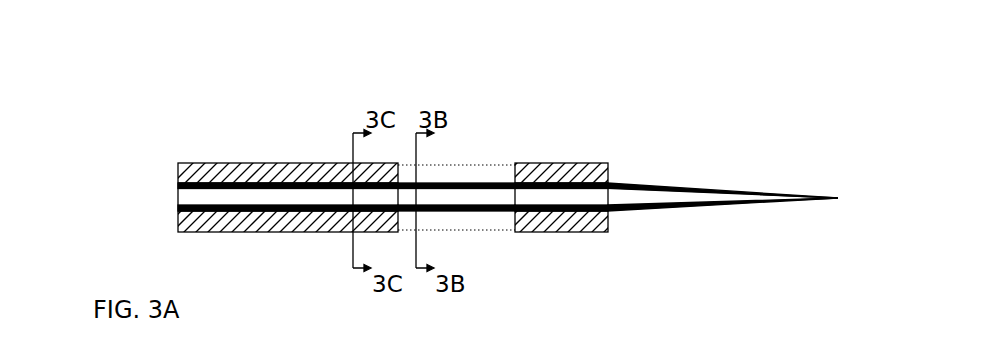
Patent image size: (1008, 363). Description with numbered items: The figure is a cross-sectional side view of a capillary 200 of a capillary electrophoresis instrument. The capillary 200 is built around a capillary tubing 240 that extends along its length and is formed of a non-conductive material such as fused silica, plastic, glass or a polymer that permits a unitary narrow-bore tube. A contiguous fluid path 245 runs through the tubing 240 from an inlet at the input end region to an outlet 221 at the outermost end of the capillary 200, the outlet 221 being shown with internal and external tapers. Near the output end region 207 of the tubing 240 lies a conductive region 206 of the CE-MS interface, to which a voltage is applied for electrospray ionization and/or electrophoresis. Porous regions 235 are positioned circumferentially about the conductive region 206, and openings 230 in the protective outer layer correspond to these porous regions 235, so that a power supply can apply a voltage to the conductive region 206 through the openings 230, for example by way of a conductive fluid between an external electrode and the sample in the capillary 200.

The capillary 200 is at (760, 106).
The conductive region 206 is at (443, 163).
The output end region 207 is at (560, 163).
The outlet 221 is at (825, 205).
The openings 230 is at (478, 232).
The porous regions 235 is at (561, 151).
The capillary tubing 240 is at (233, 163).
The fluid path 245 is at (178, 193).